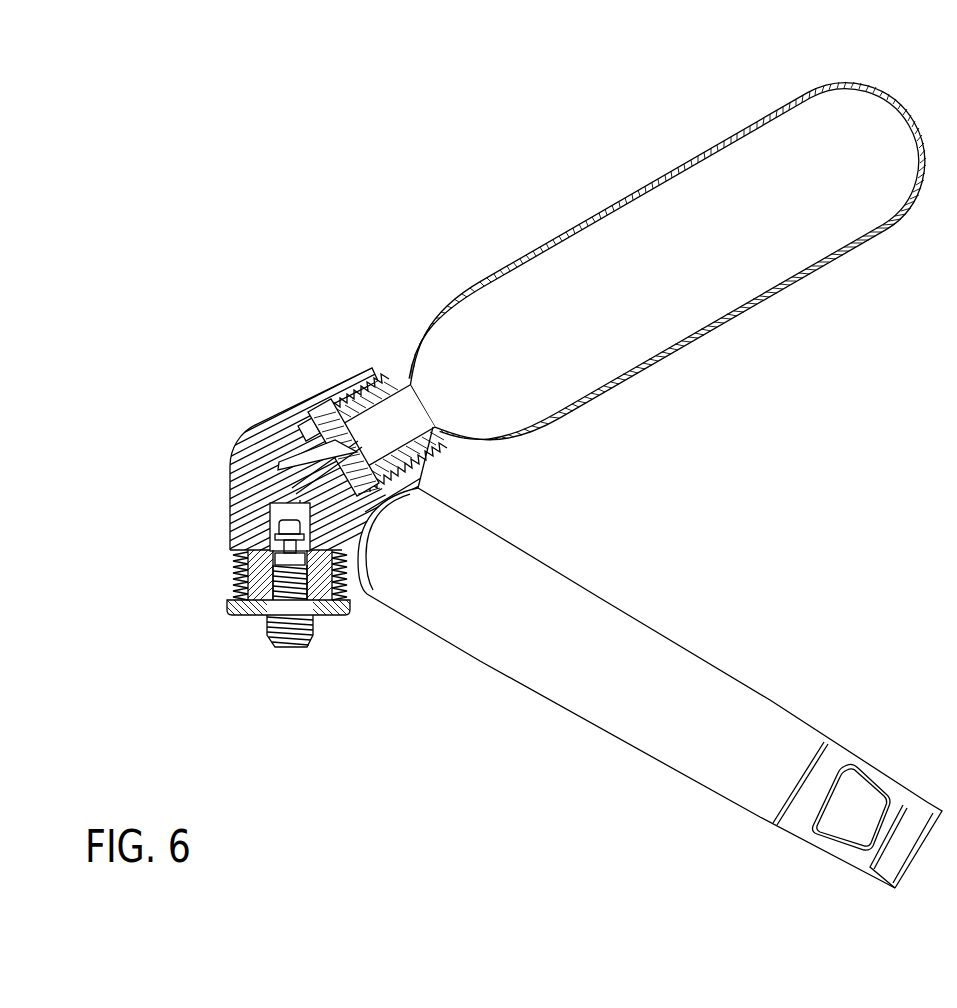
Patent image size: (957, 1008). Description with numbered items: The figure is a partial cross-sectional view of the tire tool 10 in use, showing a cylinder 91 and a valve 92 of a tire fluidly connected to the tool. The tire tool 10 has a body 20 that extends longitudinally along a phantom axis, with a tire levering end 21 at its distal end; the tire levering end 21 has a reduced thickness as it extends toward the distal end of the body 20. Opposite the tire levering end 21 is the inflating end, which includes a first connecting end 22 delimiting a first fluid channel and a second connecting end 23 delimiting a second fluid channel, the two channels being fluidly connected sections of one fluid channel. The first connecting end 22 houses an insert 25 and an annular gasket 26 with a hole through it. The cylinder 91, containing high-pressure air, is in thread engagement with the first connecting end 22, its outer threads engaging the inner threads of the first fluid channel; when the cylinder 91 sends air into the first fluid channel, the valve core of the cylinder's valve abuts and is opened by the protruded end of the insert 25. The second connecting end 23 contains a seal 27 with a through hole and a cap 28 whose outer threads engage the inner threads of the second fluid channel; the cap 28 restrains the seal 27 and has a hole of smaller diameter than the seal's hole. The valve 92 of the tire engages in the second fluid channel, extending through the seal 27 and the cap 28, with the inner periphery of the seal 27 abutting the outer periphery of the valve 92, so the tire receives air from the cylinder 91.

The tire tool 10 is at (836, 547).
The body 20 is at (642, 607).
The tire levering end 21 is at (860, 800).
The first connecting end 22 is at (362, 378).
The second connecting end 23 is at (232, 608).
The insert 25 is at (293, 413).
The gasket 26 is at (322, 408).
The seal 27 is at (233, 577).
The cap 28 is at (248, 620).
The cylinder 91 is at (797, 260).
The valve 92 is at (303, 640).